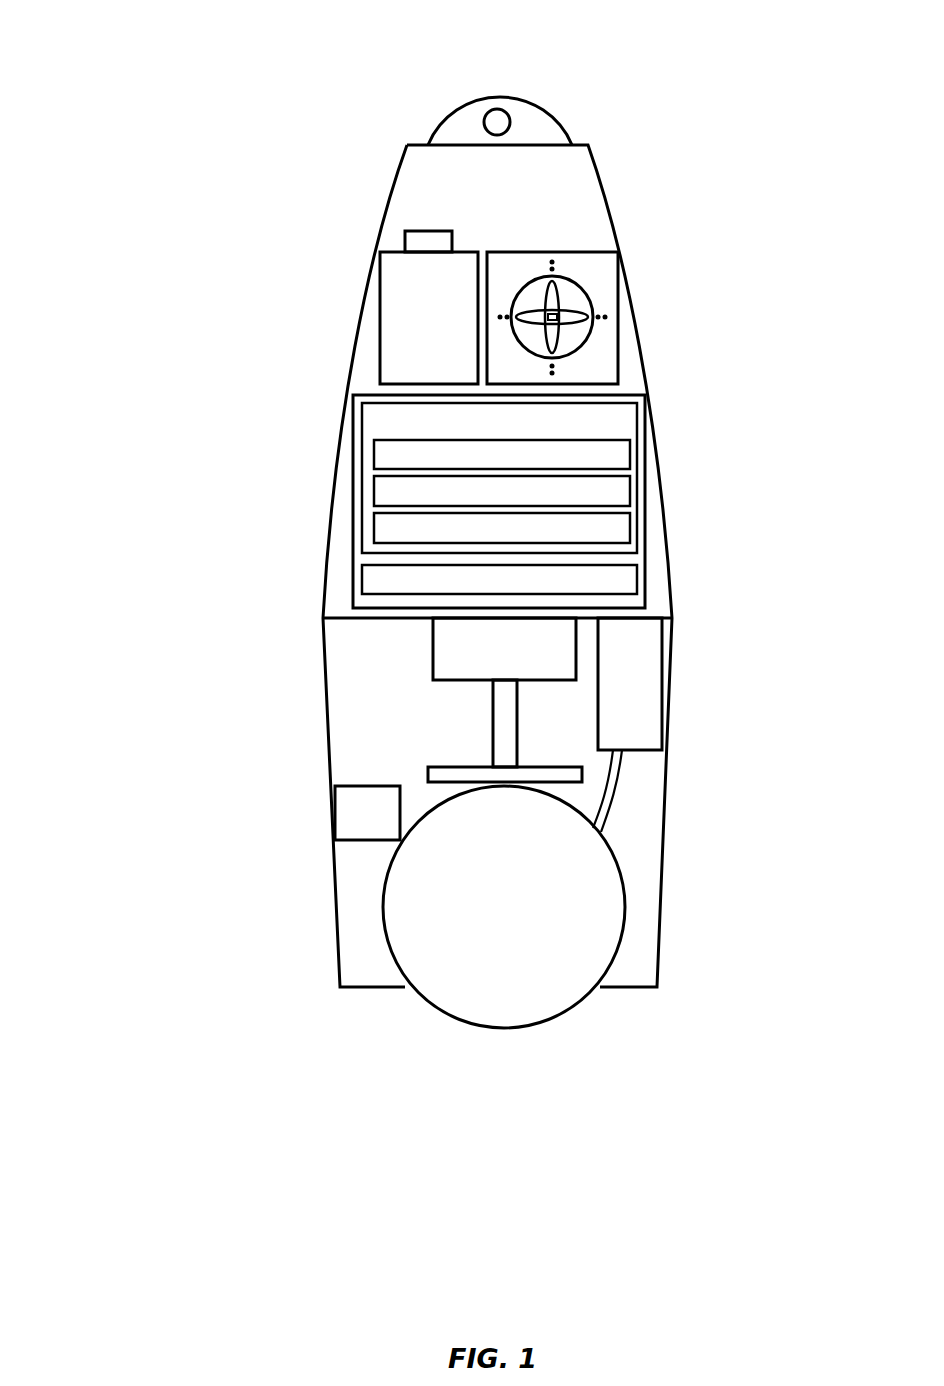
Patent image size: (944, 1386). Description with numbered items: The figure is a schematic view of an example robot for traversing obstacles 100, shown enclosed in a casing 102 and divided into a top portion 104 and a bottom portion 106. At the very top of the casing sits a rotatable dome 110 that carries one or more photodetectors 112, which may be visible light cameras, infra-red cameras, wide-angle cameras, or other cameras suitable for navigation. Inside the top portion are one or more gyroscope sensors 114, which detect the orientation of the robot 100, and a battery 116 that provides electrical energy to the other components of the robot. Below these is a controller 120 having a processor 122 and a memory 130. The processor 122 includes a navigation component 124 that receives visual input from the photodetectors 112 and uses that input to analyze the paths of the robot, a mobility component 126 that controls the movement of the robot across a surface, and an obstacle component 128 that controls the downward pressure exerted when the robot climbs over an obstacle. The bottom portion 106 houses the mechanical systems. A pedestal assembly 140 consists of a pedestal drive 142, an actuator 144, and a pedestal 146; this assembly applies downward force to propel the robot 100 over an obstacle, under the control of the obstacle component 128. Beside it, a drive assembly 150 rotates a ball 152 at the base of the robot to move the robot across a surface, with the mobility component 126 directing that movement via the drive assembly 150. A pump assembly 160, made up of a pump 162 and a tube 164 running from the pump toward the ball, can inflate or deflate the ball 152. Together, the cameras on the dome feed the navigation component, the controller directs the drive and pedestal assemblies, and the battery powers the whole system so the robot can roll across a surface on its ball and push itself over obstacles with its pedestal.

The robot for traversing obstacles 100 is at (148, 44).
The casing 102 is at (390, 196).
The top portion 104 is at (162, 222).
The bottom portion 106 is at (162, 842).
The rotatable dome 110 is at (430, 142).
The photodetectors 112 is at (499, 110).
The gyroscope sensors 114 is at (620, 322).
The battery 116 is at (380, 312).
The controller 120 is at (353, 468).
The processor 122 is at (499, 478).
The navigation component 124 is at (502, 454).
The mobility component 126 is at (502, 491).
The obstacle component 128 is at (502, 528).
The memory 130 is at (499, 579).
The pedestal assembly 140 is at (302, 663).
The pedestal drive 142 is at (433, 650).
The actuator 144 is at (493, 735).
The pedestal 146 is at (428, 770).
The drive assembly 150 is at (335, 812).
The ball 152 is at (625, 915).
The pump assembly 160 is at (735, 684).
The pump 162 is at (662, 636).
The tube 164 is at (622, 770).